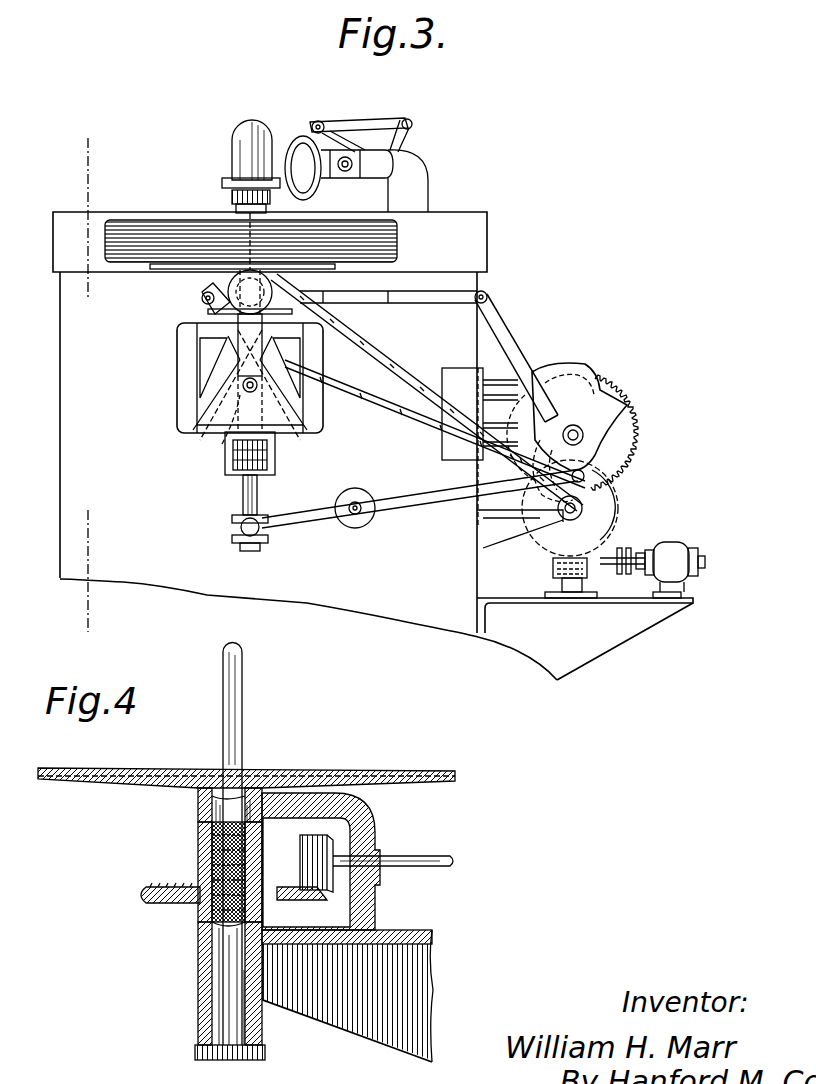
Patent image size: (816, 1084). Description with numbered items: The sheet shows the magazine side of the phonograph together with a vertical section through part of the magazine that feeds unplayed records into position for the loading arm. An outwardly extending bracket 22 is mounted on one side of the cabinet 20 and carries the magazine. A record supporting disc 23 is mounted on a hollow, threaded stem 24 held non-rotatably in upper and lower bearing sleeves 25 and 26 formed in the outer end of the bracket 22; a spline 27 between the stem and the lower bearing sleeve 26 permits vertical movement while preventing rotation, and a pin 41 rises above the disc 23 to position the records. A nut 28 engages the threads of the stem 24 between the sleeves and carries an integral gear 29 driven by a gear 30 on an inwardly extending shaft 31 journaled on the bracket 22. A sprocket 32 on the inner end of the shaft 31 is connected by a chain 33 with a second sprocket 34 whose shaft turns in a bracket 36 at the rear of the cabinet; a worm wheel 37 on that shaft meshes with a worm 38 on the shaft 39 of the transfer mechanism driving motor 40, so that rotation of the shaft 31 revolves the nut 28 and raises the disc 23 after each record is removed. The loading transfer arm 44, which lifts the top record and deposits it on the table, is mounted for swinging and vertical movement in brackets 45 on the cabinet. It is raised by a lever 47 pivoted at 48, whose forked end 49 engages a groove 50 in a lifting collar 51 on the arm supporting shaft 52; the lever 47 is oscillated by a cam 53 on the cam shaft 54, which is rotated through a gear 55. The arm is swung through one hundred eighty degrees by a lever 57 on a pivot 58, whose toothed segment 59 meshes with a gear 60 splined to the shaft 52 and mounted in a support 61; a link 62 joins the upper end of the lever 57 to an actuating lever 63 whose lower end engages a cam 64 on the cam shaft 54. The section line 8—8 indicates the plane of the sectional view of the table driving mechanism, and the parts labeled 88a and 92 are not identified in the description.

In FIG. 3, the section line 8- 8 is at (70, 150).
In FIG. 3, the cabinet 20 is at (60, 372).
In FIG. 3, the bracket 22 is at (210, 392).
In FIG. 3, the record supporting disc 23 is at (195, 268).
In FIG. 4, the record supporting disc 23 is at (420, 775).
In FIG. 4, the hollow threaded stem 24 is at (206, 950).
In FIG. 4, the upper bearing sleeve 25 is at (204, 810).
In FIG. 4, the lower bearing sleeve 26 is at (206, 1000).
In FIG. 4, the spline 27 is at (250, 1018).
In FIG. 3, the nut 28 is at (290, 287).
In FIG. 4, the nut 28 is at (200, 860).
In FIG. 4, the gear 29 is at (140, 897).
In FIG. 4, the gear 30 is at (300, 852).
In FIG. 4, the shaft 31 is at (402, 860).
In FIG. 3, the sprocket 32 is at (203, 298).
In FIG. 3, the chain 33 is at (386, 365).
In FIG. 3, the second sprocket 34 is at (585, 507).
In FIG. 3, the bracket 36 is at (505, 520).
In FIG. 3, the worm wheel 37 is at (606, 517).
In FIG. 3, the worm 38 is at (553, 566).
In FIG. 3, the shaft 39 is at (606, 562).
In FIG. 3, the transfer mechanism driving motor 40 is at (672, 555).
In FIG. 4, the pin 41 is at (238, 730).
In FIG. 3, the loading transfer arm 44 is at (252, 120).
In FIG. 3, the brackets 45 is at (232, 208).
In FIG. 3, the lever 47 is at (366, 520).
In FIG. 3, the pivot 48 is at (362, 492).
In FIG. 3, the forked end 49 is at (262, 528).
In FIG. 3, the groove 50 is at (240, 525).
In FIG. 3, the lifting collar 51 is at (240, 540).
In FIG. 3, the shaft 52 is at (244, 496).
In FIG. 3, the cam 53 is at (575, 372).
In FIG. 3, the cam shaft 54 is at (583, 435).
In FIG. 3, the gear 55 is at (630, 446).
In FIG. 3, the lever 57 is at (208, 325).
In FIG. 3, the pivot 58 is at (222, 444).
In FIG. 3, the toothed segment 59 is at (290, 428).
In FIG. 3, the gear 60 is at (270, 455).
In FIG. 3, the support 61 is at (232, 455).
In FIG. 3, the link 62 is at (418, 300).
In FIG. 3, the actuating lever 63 is at (505, 340).
In FIG. 3, the cam 64 is at (600, 395).
In FIG. 3, the lens 88a is at (292, 165).
In FIG. 3, the arm link 92 is at (408, 128).